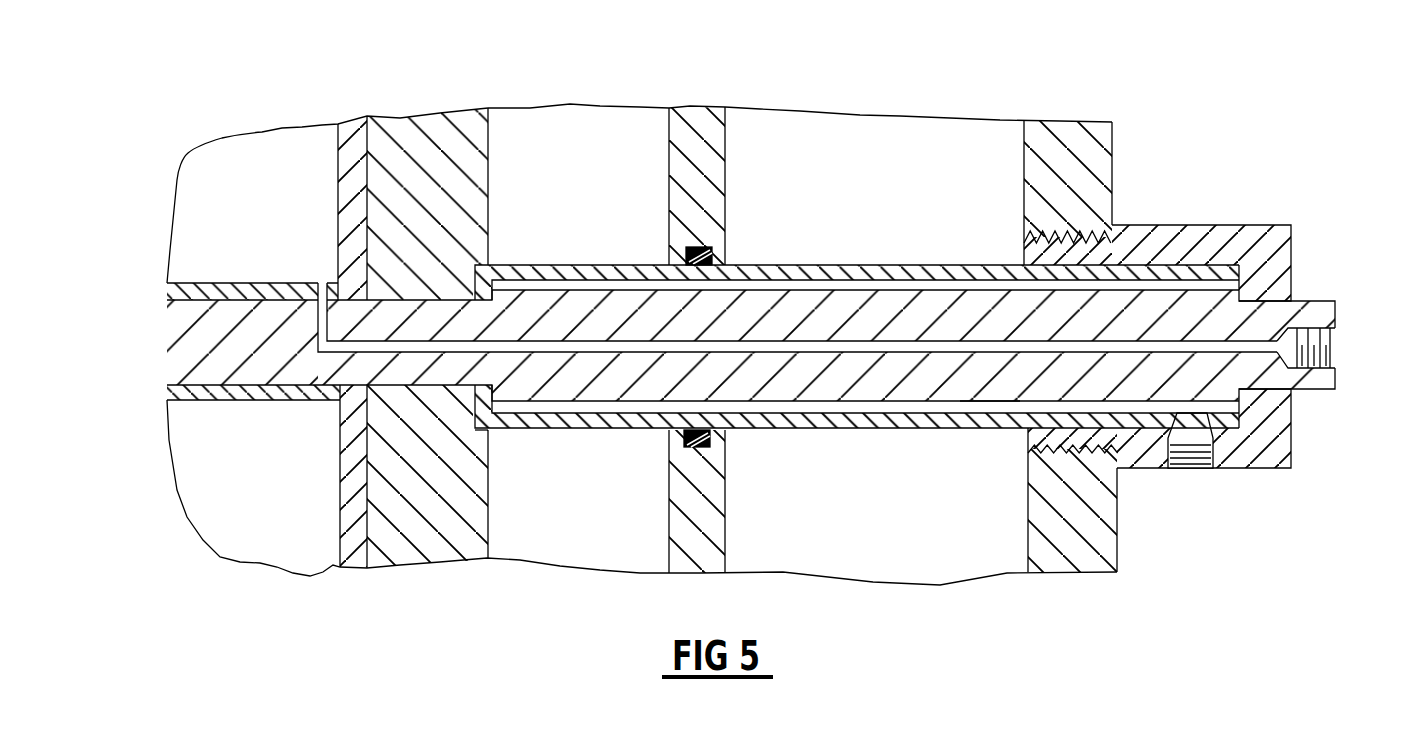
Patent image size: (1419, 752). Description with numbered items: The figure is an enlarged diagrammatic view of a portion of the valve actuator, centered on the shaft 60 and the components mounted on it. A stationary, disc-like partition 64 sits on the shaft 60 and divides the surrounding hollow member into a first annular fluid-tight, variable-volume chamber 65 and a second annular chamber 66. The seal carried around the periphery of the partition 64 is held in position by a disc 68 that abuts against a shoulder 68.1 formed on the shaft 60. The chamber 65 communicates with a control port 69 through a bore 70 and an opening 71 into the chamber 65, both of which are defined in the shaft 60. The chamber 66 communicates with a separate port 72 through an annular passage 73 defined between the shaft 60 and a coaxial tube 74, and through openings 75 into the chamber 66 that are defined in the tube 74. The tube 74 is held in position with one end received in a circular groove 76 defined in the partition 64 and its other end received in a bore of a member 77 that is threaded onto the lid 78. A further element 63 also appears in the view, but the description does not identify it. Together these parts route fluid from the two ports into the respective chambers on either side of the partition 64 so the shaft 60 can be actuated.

The shaft 60 is at (650, 385).
The partition wall 63 is at (697, 125).
The disc-like partition 64 is at (433, 137).
The first annular chamber 65 is at (277, 196).
The second annular chamber 66 is at (596, 180).
The disc 68 is at (340, 145).
The shoulder 68.1 is at (327, 400).
The control port 69 is at (1336, 345).
The bore 70 is at (1248, 345).
The opening 71 is at (324, 283).
The port 72 is at (1193, 472).
The annular passage 73 is at (993, 425).
The coaxial tube 74 is at (927, 423).
The openings 75 is at (512, 422).
The circular groove 76 is at (480, 268).
The member 77 is at (1192, 242).
The lid 78 is at (1098, 150).